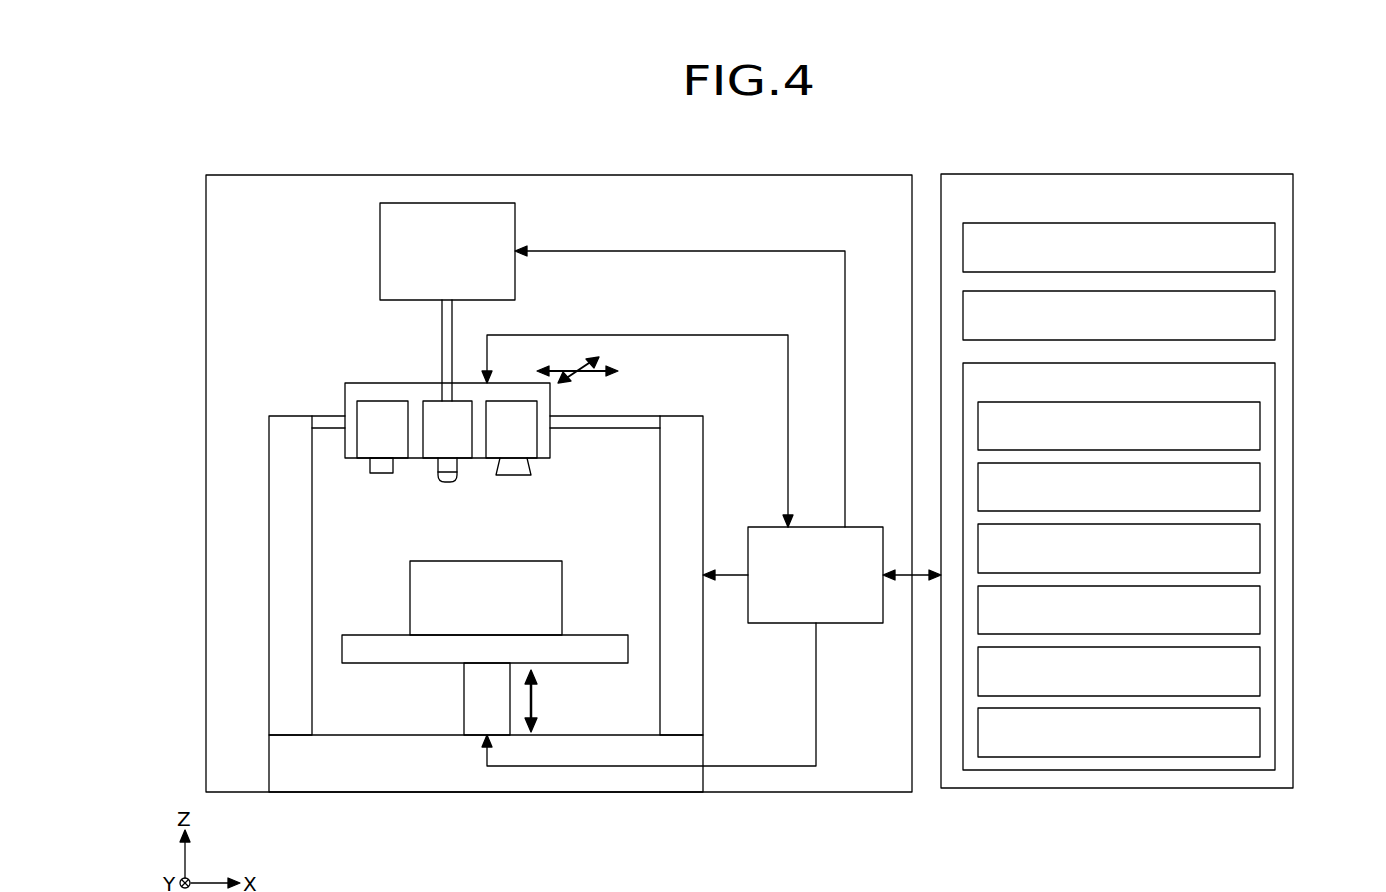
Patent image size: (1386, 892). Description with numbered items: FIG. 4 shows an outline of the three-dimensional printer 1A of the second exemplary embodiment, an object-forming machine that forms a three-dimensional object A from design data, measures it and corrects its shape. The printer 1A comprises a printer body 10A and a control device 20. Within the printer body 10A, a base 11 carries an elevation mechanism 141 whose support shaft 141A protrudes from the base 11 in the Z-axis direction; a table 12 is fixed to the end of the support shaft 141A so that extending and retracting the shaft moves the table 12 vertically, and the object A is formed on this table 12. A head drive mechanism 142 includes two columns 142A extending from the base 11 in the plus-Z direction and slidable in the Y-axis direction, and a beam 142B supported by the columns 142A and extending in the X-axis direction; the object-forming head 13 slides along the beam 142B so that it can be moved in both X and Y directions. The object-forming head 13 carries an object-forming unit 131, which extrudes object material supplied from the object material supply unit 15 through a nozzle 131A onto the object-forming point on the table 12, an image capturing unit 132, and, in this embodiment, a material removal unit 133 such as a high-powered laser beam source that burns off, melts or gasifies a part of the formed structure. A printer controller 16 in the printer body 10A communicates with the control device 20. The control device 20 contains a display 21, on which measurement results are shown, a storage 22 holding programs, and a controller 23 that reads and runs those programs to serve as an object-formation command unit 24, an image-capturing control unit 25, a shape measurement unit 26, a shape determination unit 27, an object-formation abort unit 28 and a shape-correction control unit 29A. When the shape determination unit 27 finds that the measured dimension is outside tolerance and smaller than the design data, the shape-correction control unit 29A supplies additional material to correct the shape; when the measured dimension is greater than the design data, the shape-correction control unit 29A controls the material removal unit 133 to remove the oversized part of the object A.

The 3D printer 1A is at (1020, 110).
The printer body 10A is at (805, 175).
The control device 20 is at (1118, 174).
The object material supply unit 15 is at (515, 218).
The object-forming head 13 is at (380, 383).
The material removal unit 133 is at (365, 447).
The object-forming unit 131 is at (432, 447).
The nozzle 131A is at (457, 478).
The image capturing unit 132 is at (537, 445).
The head drive mechanism 142 is at (245, 608).
The columns 142A is at (285, 432).
The beam 142B is at (620, 428).
The base 11 is at (375, 790).
The three-dimensional object A is at (562, 596).
The table 12 is at (597, 664).
The elevation mechanism 141 is at (465, 755).
The support shaft 141A is at (471, 700).
The printer controller 16 is at (858, 624).
The display 21 is at (1275, 247).
The storage 22 is at (1275, 313).
The controller 23 is at (1275, 378).
The object-formation command unit 24 is at (1260, 428).
The image-capturing control unit 25 is at (1260, 488).
The shape measurement unit 26 is at (1260, 548).
The shape determination unit 27 is at (1260, 610).
The object-formation abort unit 28 is at (1260, 672).
The shape-correction control unit 29A is at (1260, 732).